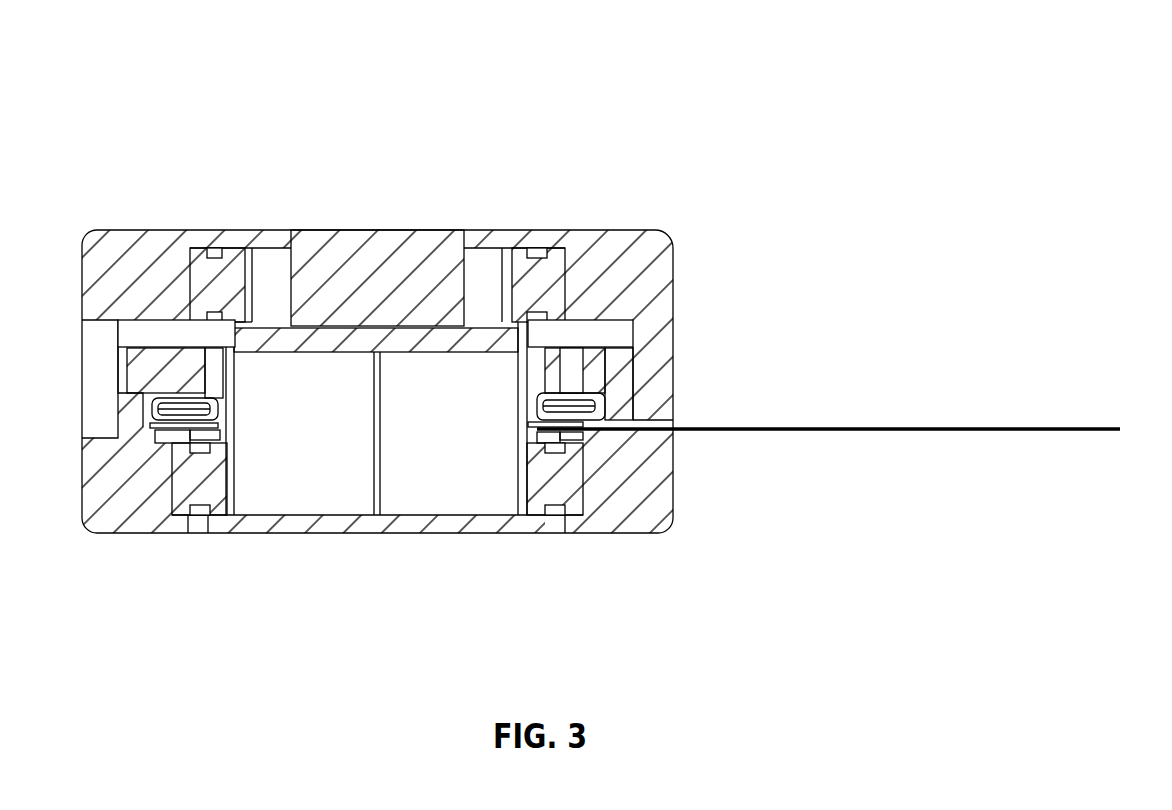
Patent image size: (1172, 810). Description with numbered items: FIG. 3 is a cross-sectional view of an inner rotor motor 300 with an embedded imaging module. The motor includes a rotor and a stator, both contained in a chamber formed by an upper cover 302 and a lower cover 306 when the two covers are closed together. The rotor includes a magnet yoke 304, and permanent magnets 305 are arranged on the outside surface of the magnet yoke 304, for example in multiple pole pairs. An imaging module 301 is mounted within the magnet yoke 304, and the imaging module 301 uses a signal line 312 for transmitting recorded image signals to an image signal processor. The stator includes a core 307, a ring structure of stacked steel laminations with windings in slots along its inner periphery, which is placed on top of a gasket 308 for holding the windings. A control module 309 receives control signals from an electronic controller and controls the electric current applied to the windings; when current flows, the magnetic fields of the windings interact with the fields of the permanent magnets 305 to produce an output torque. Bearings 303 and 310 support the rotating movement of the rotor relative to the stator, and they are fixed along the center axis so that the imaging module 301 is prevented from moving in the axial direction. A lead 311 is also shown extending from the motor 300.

The sensor assembly 300 is at (1038, 33).
The imaging module 301 is at (384, 267).
The upper cover 302 is at (133, 252).
The bearing 303 is at (224, 261).
The magnet yoke 304 is at (504, 242).
The permanent magnets 305 is at (539, 351).
The lower cover 306 is at (601, 507).
The core 307 is at (608, 372).
The gasket 308 is at (146, 427).
The control module 309 is at (587, 434).
The bearing 310 is at (207, 489).
The sensing strip 311 is at (954, 419).
The signal line 312 is at (371, 474).